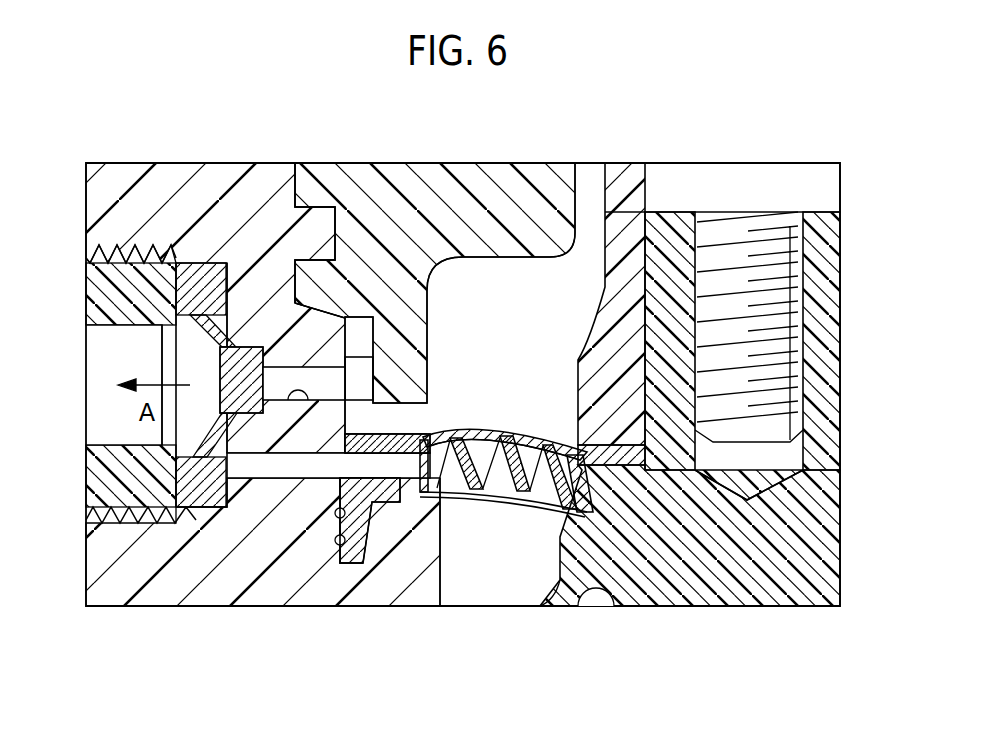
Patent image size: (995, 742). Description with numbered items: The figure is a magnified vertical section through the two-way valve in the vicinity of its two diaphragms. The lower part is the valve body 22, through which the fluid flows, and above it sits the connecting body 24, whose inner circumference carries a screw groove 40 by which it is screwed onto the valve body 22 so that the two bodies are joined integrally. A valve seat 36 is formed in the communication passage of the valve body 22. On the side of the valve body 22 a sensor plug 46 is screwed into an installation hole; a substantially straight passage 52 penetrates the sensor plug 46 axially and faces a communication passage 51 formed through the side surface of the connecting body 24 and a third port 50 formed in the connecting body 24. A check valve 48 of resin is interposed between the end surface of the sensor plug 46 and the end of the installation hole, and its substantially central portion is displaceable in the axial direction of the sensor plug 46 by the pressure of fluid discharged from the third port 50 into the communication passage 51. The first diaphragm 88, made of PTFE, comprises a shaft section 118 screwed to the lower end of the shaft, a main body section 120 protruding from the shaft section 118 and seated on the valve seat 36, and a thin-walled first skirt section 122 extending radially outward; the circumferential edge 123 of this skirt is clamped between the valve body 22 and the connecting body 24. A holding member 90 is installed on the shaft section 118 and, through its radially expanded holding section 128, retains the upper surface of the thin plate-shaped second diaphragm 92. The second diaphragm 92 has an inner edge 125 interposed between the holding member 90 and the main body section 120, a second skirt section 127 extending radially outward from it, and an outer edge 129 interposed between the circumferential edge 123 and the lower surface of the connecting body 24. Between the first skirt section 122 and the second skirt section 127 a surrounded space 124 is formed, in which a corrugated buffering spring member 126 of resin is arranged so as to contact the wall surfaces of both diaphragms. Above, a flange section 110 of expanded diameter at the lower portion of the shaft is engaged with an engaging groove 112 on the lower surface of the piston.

The valve body 22 is at (194, 190).
The connecting body 24 is at (430, 187).
The screw groove 40 is at (300, 235).
The sensor plug 46 is at (108, 497).
The check valve 48 is at (204, 507).
The third port 50 is at (398, 502).
The communication passage 51 is at (305, 400).
The passage 52 is at (100, 442).
The valve seat 36 is at (592, 590).
The first diaphragm 88 is at (797, 608).
The holding member 90 is at (452, 445).
The second diaphragm 92 is at (610, 436).
The flange section 110 is at (802, 185).
The engaging groove 112 is at (660, 185).
The shaft section 118 is at (840, 330).
The main body section 120 is at (720, 590).
The first skirt section 122 is at (510, 498).
The circumferential edge 123 is at (349, 565).
The space 124 is at (543, 518).
The inner edge 125 is at (620, 458).
The buffering spring member 126 is at (520, 432).
The second skirt section 127 is at (478, 436).
The holding section 128 is at (460, 512).
The outer edge 129 is at (262, 376).